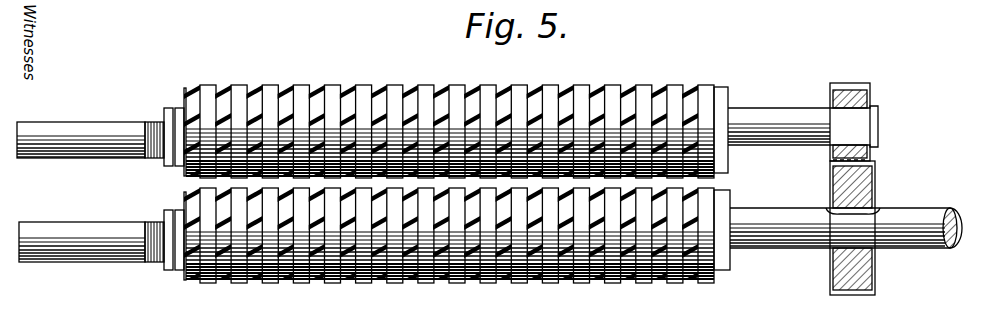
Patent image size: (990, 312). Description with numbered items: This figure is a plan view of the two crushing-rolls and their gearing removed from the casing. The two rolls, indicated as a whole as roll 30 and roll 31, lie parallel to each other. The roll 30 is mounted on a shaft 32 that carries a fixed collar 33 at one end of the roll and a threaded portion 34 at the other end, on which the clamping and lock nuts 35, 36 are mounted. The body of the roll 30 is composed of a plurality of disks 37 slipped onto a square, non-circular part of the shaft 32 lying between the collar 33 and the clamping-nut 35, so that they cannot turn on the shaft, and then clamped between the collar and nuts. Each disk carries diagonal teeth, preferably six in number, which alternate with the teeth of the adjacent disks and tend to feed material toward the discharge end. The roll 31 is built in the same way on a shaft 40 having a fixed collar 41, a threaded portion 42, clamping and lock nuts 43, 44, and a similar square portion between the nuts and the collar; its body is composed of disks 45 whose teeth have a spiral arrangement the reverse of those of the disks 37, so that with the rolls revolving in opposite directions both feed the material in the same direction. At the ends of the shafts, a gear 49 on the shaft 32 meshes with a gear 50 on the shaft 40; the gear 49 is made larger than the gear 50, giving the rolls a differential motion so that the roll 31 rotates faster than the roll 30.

The crushing-roll 30 is at (462, 284).
The crushing-roll 31 is at (400, 85).
The shaft 32 is at (804, 240).
The fixed collar 33 is at (733, 197).
The threaded portion 34 is at (137, 221).
The clamping-nut 35 is at (181, 272).
The lock nut 36 is at (163, 266).
The disks 37 is at (367, 285).
The shaft 40 is at (770, 113).
The fixed collar 41 is at (724, 96).
The threaded portion 42 is at (158, 121).
The clamping-nut 43 is at (182, 106).
The lock nut 44 is at (172, 107).
The disks 45 is at (326, 85).
The gear 49 is at (868, 270).
The gear 50 is at (858, 94).